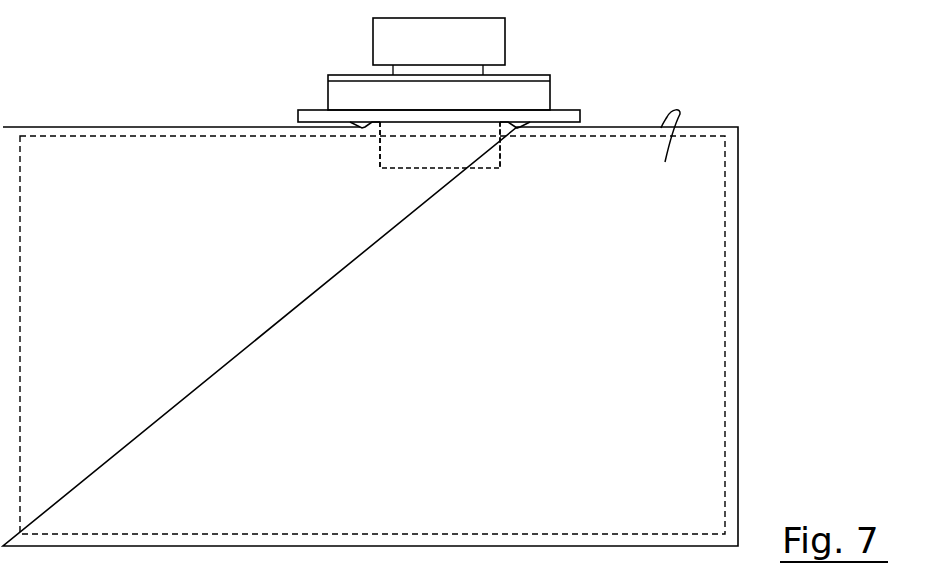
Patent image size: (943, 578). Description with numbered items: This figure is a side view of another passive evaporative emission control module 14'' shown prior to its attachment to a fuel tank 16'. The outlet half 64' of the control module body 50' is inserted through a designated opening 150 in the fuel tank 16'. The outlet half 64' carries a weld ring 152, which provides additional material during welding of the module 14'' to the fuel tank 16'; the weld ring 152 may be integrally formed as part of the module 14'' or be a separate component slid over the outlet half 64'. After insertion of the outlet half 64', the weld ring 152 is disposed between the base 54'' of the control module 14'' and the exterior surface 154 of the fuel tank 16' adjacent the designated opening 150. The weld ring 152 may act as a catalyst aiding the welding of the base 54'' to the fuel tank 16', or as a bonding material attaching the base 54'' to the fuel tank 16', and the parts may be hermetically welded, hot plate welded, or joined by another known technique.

The fuel tank 16' is at (397, 336).
The base 54'' is at (417, 87).
The passive evaporative emission control module 14'' is at (474, 64).
The weld ring 152 is at (353, 123).
The designated opening 150 is at (381, 133).
The control module body 50' is at (440, 178).
The outlet half 64' is at (525, 172).
The exterior surface 154 is at (672, 154).